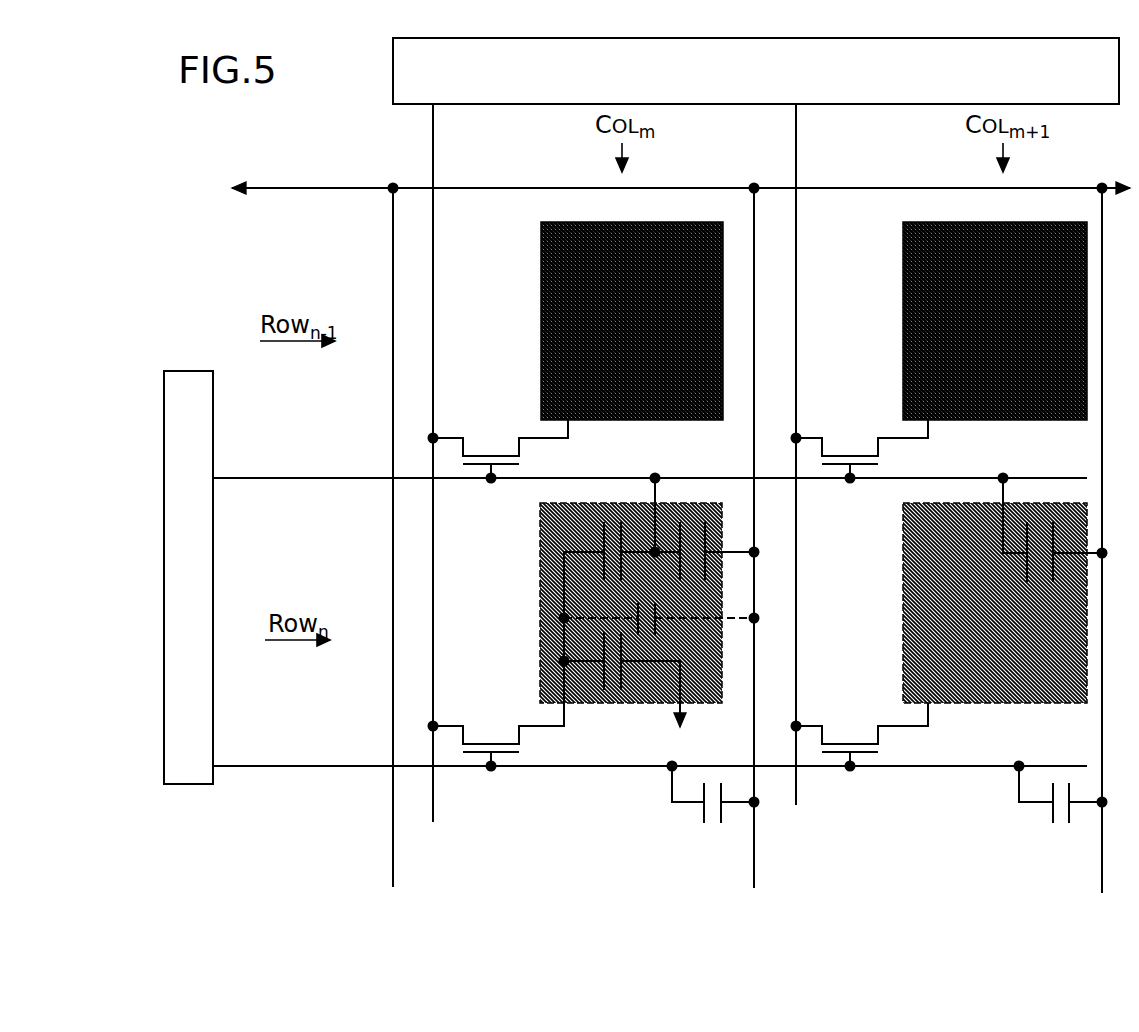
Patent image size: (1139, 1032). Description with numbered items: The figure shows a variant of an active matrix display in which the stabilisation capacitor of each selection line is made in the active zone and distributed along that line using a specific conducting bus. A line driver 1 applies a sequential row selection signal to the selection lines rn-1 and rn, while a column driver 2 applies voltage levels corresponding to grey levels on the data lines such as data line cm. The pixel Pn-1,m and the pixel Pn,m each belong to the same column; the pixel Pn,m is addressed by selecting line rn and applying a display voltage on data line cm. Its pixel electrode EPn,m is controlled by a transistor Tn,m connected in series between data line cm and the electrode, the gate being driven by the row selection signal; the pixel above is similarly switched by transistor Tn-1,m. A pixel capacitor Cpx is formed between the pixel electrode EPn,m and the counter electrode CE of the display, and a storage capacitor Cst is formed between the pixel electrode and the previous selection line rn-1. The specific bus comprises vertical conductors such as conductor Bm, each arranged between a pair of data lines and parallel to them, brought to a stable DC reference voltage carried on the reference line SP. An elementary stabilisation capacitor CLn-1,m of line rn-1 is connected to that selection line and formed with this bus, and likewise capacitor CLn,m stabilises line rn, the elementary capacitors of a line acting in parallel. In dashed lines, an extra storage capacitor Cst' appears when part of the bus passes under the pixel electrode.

The line driver 1 is at (178, 770).
The column driver 2 is at (394, 84).
The reference voltage line SP is at (284, 188).
The vertical conductor Bm is at (393, 823).
The data line cm is at (433, 173).
The selection line rn-1 is at (286, 479).
The selection line rn is at (280, 767).
The pixel Pn-1,m is at (541, 320).
The pixel Pn,m is at (552, 558).
The pixel electrode EPn,m is at (564, 661).
The transistor Tn-1,m is at (500, 445).
The transistor Tn,m is at (498, 713).
The storage capacitor Cst is at (600, 565).
The storage capacitor Cst' is at (659, 629).
The pixel capacitor Cpx is at (622, 662).
The counter electrode CE is at (676, 713).
The stabilisation capacitor CLn-1,m is at (665, 543).
The stabilisation capacitor CLn,m is at (713, 811).